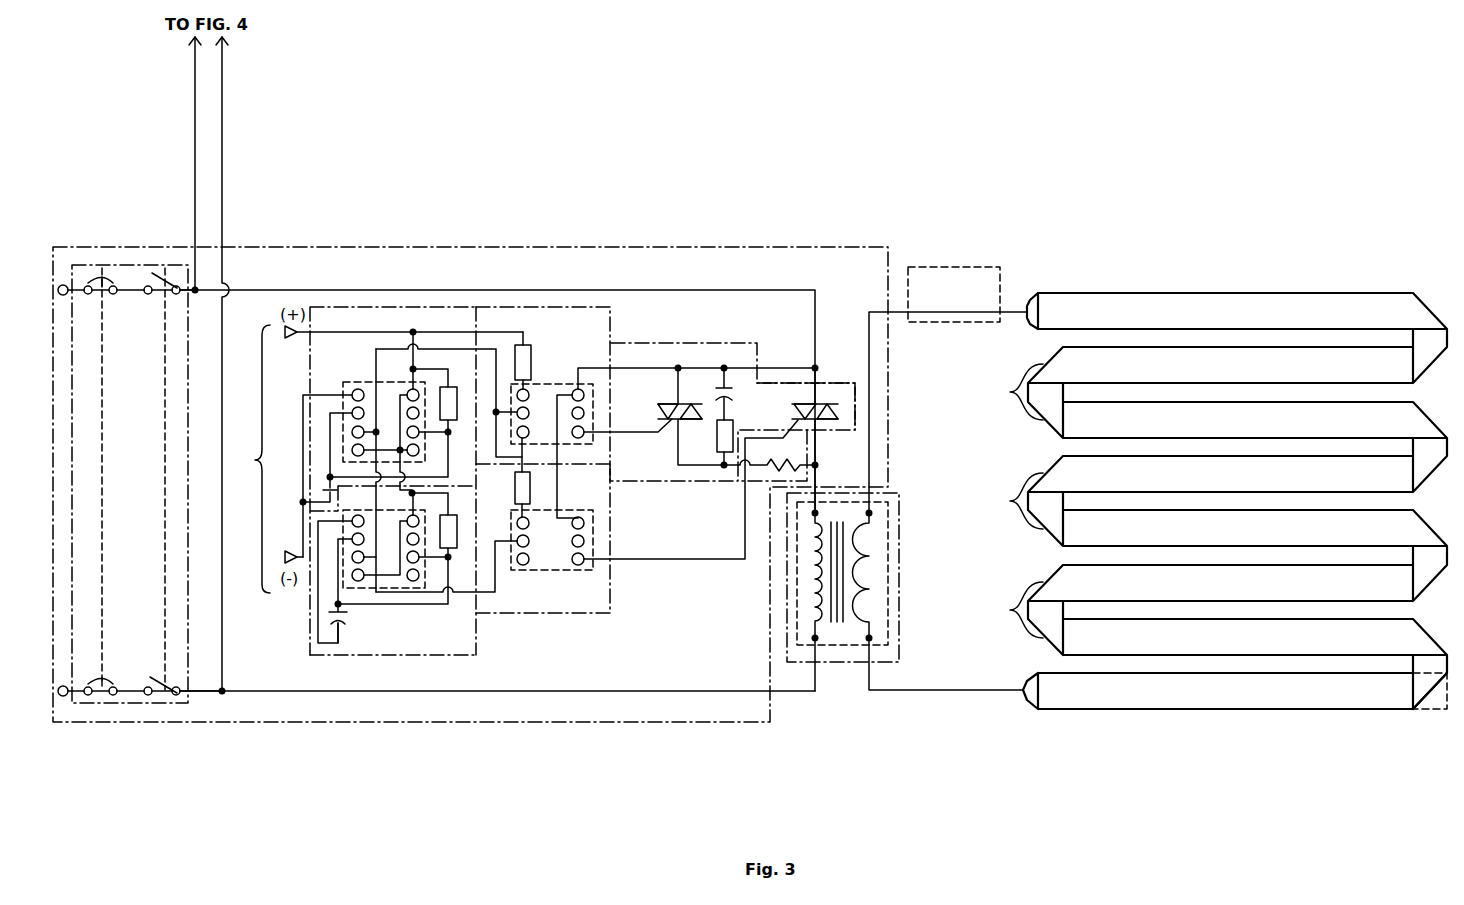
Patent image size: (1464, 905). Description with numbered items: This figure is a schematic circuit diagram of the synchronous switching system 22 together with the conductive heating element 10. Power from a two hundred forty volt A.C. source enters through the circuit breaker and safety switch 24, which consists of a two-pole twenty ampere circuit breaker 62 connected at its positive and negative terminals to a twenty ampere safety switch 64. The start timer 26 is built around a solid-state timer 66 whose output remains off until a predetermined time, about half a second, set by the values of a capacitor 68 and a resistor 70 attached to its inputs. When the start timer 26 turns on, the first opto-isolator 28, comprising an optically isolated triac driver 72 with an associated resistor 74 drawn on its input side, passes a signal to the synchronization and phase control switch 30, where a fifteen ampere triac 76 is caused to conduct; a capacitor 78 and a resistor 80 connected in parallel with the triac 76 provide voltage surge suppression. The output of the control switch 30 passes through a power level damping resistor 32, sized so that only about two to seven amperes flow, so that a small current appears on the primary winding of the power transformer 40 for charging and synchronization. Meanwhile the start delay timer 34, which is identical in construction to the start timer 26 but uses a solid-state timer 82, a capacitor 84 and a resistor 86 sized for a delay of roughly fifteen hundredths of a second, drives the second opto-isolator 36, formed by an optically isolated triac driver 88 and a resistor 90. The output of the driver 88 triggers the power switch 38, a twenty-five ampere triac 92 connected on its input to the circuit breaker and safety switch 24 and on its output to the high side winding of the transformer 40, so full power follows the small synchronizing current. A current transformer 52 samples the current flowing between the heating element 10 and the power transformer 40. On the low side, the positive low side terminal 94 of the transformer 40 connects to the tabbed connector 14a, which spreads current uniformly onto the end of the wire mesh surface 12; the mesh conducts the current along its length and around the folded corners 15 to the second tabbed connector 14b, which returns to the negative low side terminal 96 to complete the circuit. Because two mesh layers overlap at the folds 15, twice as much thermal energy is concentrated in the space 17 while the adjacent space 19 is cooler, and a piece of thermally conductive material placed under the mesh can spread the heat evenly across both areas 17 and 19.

The conductive heating element 10 is at (1219, 514).
The wire mesh surface 12 is at (1108, 303).
The tabbed connector 14a is at (1033, 302).
The second tabbed connector 14b is at (1025, 702).
The corners 15 is at (1010, 392).
The space 17 is at (1410, 692).
The space 19 is at (1422, 710).
The synchronous switching system 22 is at (270, 724).
The circuit breaker and safety switch 24 is at (183, 697).
The start timer 26 is at (412, 306).
The first opto-isolator 28 is at (614, 320).
The synchronization and phase control switch 30 is at (672, 343).
The power level damping resistor 32 is at (808, 446).
The start delay timer 34 is at (418, 656).
The second opto-isolator 36 is at (555, 614).
The power switch 38 is at (825, 383).
The power transformer 40 is at (828, 663).
The current transformer 52 is at (957, 266).
The circuit breaker 62 is at (105, 490).
The safety switch 64 is at (165, 586).
The solid-state timer 66 is at (356, 382).
The capacitor 68 is at (329, 475).
The resistor 70 is at (452, 387).
The optically isolated triac driver 72 is at (540, 384).
The resistor 74 is at (531, 345).
The triac 76 is at (665, 403).
The capacitor 78 is at (710, 393).
The resistor 80 is at (716, 432).
The solid-state timer 82 is at (390, 590).
The capacitor 84 is at (340, 628).
The resistor 86 is at (458, 532).
The optically isolated triac driver 88 is at (545, 565).
The resistor 90 is at (515, 495).
The triac 92 is at (797, 404).
The positive low side terminal 94 is at (873, 514).
The negative low side terminal 96 is at (873, 637).